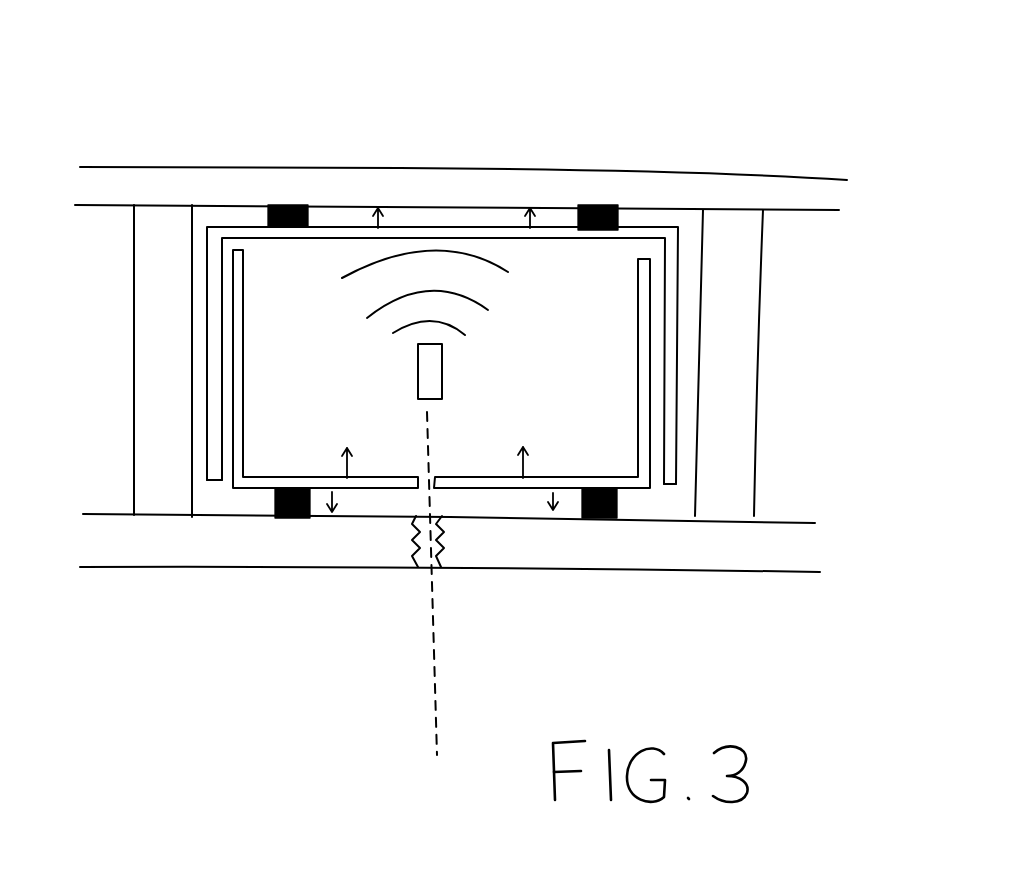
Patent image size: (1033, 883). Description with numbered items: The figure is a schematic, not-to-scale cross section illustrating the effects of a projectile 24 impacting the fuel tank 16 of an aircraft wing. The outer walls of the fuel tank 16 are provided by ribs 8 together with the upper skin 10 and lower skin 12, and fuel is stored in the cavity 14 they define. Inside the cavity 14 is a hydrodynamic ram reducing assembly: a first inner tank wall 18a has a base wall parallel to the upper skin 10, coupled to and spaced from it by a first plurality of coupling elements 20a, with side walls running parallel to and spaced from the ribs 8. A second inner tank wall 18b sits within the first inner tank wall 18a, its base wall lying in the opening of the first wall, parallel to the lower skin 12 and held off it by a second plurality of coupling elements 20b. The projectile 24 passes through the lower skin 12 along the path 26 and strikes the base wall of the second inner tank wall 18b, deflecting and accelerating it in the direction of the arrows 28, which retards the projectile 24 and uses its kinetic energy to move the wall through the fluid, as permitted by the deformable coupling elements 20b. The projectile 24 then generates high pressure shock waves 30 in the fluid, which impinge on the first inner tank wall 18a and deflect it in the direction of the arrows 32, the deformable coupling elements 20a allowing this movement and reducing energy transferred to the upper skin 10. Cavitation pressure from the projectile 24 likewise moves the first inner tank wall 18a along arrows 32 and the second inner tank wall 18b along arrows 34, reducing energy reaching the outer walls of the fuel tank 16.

The ribs 8 is at (143, 360).
The upper skin 10 is at (700, 180).
The lower skin 12 is at (195, 553).
The cavity 14 is at (572, 337).
The fuel tank 16 is at (560, 107).
The first inner tank wall 18a is at (318, 242).
The second inner tank wall 18b is at (583, 477).
The first plurality of coupling elements 20a is at (288, 203).
The second plurality of coupling elements 20b is at (298, 518).
The projectile 24 is at (442, 370).
The path of the projectile 26 is at (433, 702).
The direction of deflection of the second inner tank wall 28 is at (345, 467).
The shock waves 30 is at (503, 263).
The direction of deflection of the first inner tank wall 32 is at (378, 226).
The direction of deflection of the second inner tank wall under cavitation pressure 34 is at (340, 494).